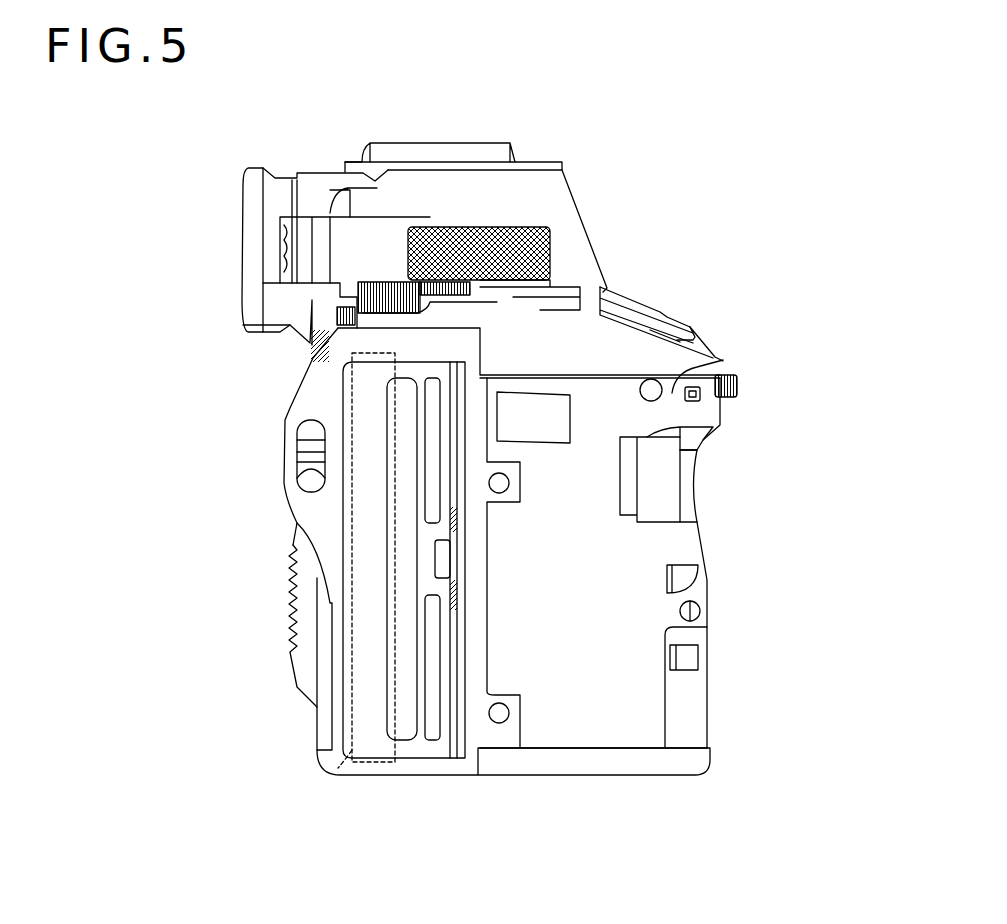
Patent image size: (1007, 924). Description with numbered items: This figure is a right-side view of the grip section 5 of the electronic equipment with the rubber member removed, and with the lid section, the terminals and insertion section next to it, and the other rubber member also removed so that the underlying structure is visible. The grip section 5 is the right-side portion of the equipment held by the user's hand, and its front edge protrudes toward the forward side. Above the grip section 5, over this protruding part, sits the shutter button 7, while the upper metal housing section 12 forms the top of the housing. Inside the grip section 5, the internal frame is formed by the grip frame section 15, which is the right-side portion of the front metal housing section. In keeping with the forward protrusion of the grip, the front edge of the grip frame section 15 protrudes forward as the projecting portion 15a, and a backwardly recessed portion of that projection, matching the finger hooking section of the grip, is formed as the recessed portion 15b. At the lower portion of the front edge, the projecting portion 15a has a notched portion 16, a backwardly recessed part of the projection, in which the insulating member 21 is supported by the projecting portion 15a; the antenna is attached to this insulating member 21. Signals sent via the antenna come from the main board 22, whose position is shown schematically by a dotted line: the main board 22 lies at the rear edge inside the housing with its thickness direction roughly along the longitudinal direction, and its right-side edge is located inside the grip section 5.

The upper metal housing section 12 is at (552, 197).
The shutter button 7 is at (640, 293).
The projecting portion 15a is at (723, 360).
The recessed portion 15b is at (720, 489).
The notched portion 16 is at (707, 627).
The insulating member 21 is at (693, 720).
The grip frame section 15 is at (636, 777).
The grip section 5 is at (712, 828).
The main board 22 is at (320, 768).